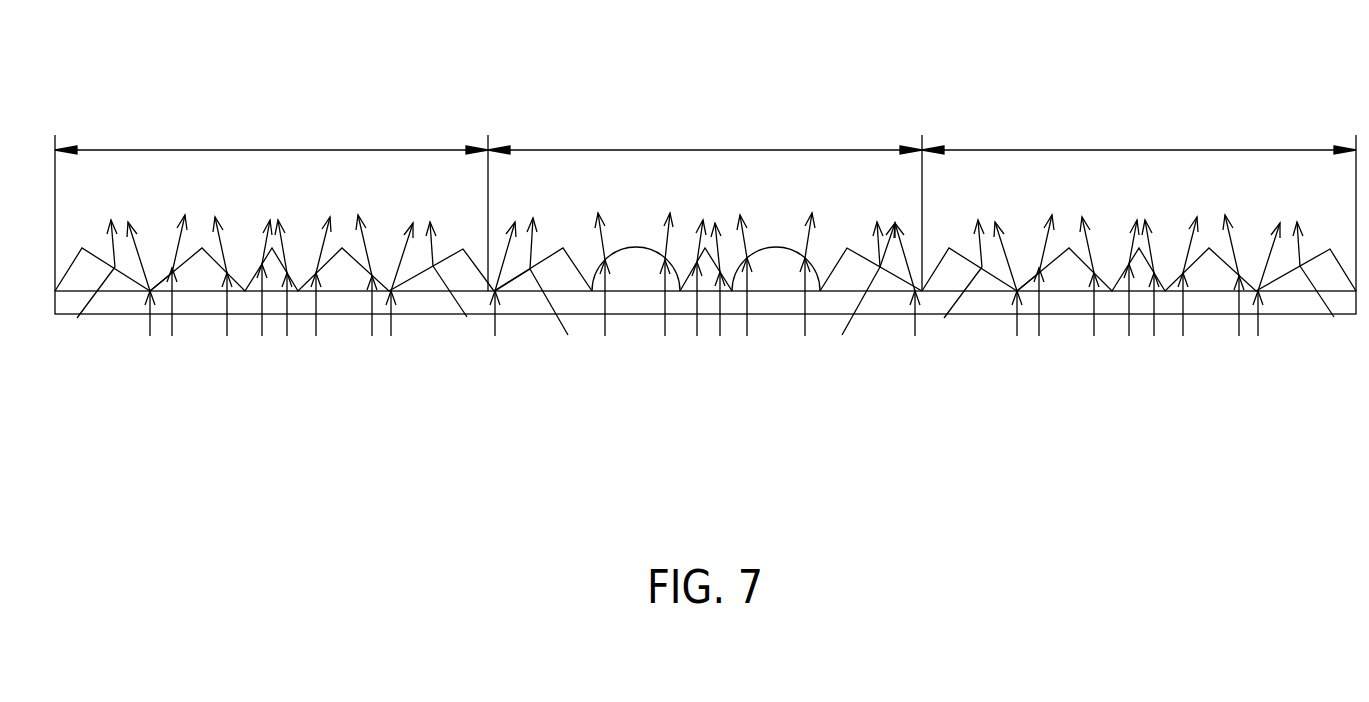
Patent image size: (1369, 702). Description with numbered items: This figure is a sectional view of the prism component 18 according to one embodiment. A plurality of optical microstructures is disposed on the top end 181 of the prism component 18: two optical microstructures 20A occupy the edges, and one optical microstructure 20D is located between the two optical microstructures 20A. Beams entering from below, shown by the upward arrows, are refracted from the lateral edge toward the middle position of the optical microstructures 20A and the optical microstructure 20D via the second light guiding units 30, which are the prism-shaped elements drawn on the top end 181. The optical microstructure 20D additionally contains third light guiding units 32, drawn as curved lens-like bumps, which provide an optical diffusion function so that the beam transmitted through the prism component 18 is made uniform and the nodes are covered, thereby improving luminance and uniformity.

The prism component 18 is at (1192, 70).
The top end 181 is at (773, 307).
The second light guiding unit 30 is at (82, 265).
The third light guiding unit 32 is at (625, 267).
The optical microstructure 20A is at (705, 204).
The optical microstructure 20D is at (705, 135).